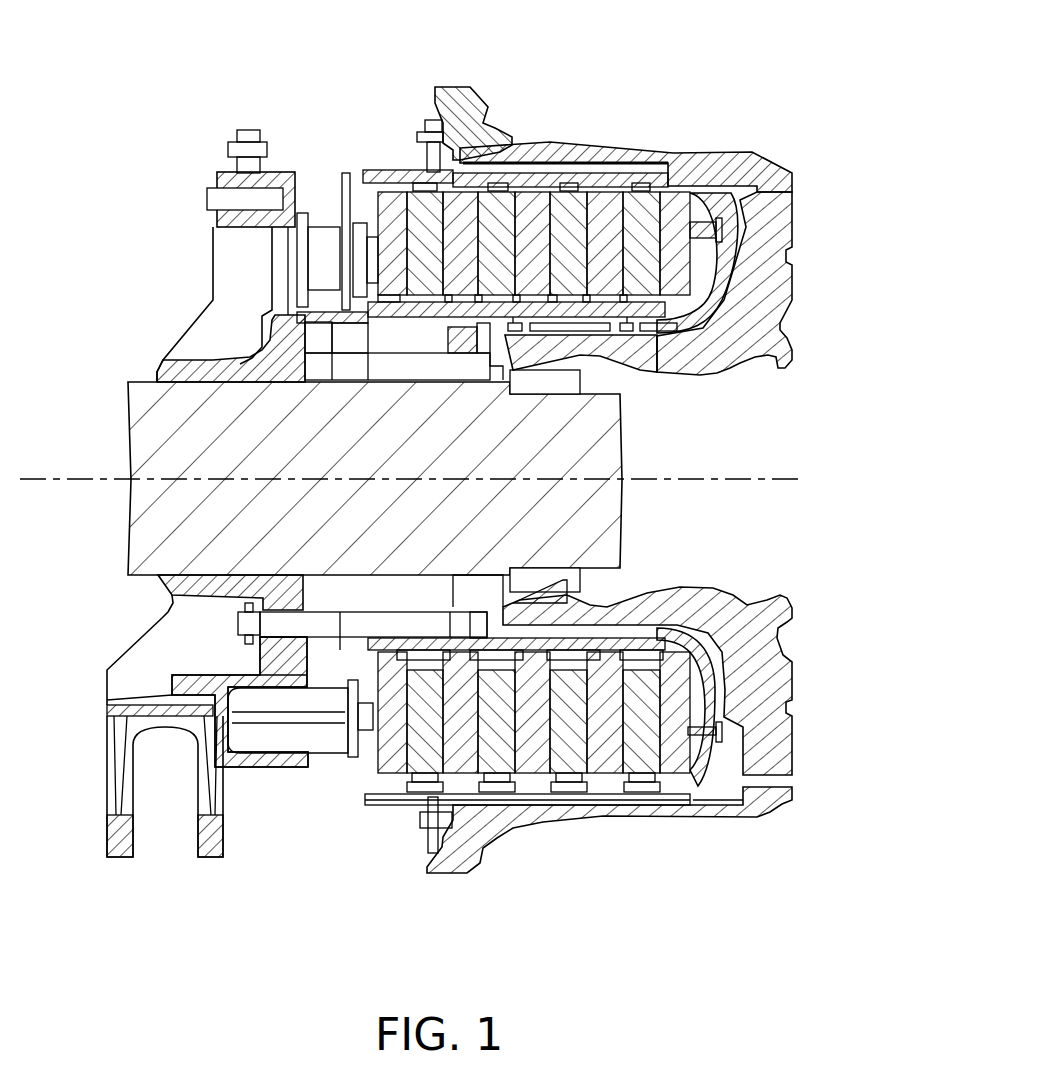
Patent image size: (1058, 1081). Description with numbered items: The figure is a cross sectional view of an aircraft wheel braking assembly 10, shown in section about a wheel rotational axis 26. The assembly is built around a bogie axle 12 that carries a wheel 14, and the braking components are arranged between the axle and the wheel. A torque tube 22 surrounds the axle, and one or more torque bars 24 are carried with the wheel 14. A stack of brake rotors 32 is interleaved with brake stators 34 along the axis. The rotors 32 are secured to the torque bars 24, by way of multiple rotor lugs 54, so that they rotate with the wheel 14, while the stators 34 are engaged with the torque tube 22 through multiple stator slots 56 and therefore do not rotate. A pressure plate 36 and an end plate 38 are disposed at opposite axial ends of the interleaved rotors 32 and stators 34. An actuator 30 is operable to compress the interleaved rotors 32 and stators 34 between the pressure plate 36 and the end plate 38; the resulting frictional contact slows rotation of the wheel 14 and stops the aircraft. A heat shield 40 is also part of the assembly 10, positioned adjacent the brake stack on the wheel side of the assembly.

The wheel braking assembly 10 is at (820, 86).
The bogie axle 12 is at (108, 428).
The wheel 14 is at (645, 128).
The torque tube 22 is at (420, 305).
The torque bars 24 is at (376, 170).
The wheel rotational axis 26 is at (683, 479).
The actuator 30 is at (272, 775).
The brake rotors 32 is at (434, 258).
The brake stators 34 is at (470, 258).
The pressure plate 36 is at (402, 258).
The end plate 38 is at (684, 258).
The heat shield 40 is at (398, 812).
The rotor lugs 54 is at (560, 187).
The stator slots 56 is at (453, 300).